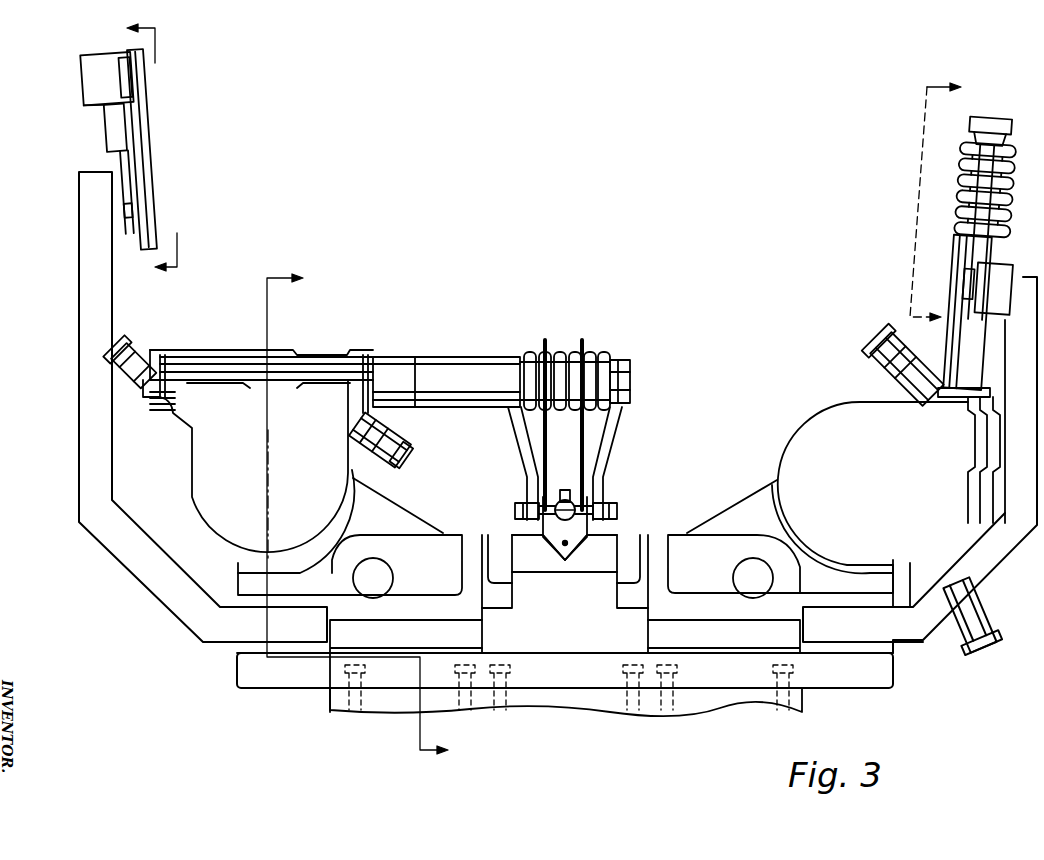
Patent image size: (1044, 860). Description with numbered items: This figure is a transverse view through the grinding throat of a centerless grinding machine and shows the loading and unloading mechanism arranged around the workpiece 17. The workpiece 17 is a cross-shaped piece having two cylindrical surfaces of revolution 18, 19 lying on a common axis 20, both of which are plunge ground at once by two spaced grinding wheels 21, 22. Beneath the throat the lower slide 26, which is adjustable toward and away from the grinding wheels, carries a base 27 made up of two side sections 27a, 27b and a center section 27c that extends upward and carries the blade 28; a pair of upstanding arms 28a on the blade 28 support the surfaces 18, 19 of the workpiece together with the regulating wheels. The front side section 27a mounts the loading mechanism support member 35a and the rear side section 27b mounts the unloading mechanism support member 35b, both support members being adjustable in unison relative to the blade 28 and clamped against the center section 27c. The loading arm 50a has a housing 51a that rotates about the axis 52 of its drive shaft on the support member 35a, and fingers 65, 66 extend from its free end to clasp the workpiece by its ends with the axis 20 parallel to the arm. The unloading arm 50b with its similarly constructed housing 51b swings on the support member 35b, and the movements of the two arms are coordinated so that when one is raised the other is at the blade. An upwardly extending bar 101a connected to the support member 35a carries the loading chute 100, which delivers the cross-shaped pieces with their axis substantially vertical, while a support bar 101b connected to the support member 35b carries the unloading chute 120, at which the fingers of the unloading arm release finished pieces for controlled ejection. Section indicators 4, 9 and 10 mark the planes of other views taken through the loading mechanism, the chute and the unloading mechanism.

The section line 9- 9 is at (155, 166).
The section line 4- 4 is at (367, 516).
The section line 10- 10 is at (945, 188).
The loading chute 100 is at (150, 173).
The upwardly extending bar 101a is at (79, 323).
The support bar 101b is at (987, 577).
The arm housing 51a is at (192, 458).
The arm housing 51b is at (818, 417).
The axis 52 is at (270, 490).
The loading arm 50a is at (460, 356).
The unloading arm 50b is at (958, 275).
The unloading chute 120 is at (962, 177).
The grinding wheel 21 is at (546, 340).
The grinding wheel 22 is at (582, 340).
The finger 65 is at (623, 424).
The finger 66 is at (517, 450).
The workpiece 17 is at (550, 500).
The axis 20 is at (566, 496).
The cylindrical surface of revolution 18 is at (530, 506).
The cylindrical surface of revolution 19 is at (605, 510).
The loading mechanism support member 35a is at (427, 528).
The unloading mechanism support member 35b is at (722, 516).
The blade 28 is at (563, 573).
The upstanding arms 28a is at (566, 546).
The base 27 is at (745, 695).
The side section 27a is at (330, 676).
The side section 27b is at (800, 672).
The center section 27c is at (553, 712).
The lower slide 26 is at (330, 712).